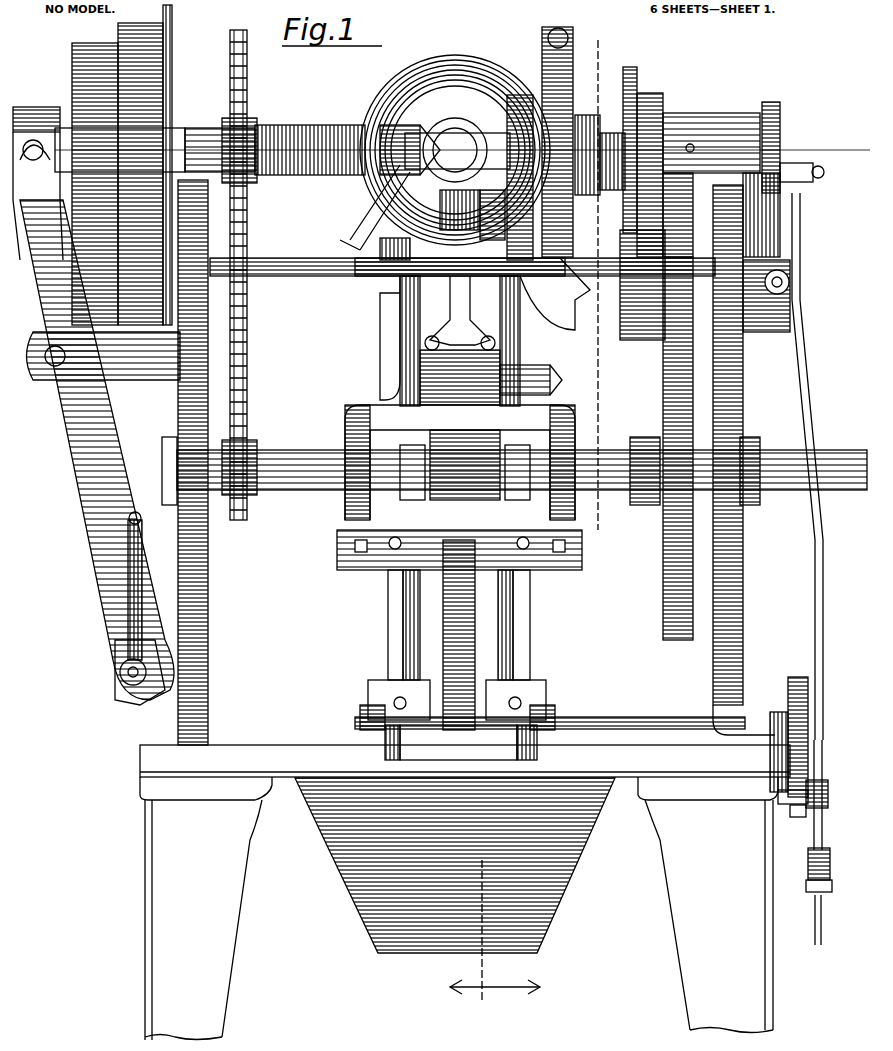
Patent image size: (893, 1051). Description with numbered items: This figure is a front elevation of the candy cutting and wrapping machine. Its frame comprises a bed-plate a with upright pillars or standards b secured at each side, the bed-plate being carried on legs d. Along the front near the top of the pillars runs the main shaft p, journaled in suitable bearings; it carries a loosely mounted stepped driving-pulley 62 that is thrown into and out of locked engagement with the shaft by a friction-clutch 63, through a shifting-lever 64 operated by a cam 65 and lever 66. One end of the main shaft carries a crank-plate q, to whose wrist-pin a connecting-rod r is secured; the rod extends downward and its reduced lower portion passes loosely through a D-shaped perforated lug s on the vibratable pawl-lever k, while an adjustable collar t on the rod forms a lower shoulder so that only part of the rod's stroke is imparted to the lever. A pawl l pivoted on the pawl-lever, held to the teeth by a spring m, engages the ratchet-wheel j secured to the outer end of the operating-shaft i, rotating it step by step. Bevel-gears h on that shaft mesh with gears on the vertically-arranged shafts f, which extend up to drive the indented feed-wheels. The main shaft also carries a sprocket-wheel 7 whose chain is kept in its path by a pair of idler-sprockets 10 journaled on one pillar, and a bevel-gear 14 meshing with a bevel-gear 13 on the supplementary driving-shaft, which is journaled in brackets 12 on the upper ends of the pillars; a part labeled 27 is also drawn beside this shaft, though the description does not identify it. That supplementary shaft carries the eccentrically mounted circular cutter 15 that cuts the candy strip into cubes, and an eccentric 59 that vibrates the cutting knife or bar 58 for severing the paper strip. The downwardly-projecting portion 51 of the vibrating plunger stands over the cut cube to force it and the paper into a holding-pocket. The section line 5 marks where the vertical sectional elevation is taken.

The section line 5 is at (532, 516).
The sprocket-wheel 7 is at (250, 105).
The idler-sprockets 10 is at (246, 418).
The supporting arms or brackets 12 is at (305, 125).
The bevel-gear 13 is at (478, 130).
The bevel-gear 14 is at (425, 115).
The circular cutter 15 is at (472, 55).
The collar 27 is at (540, 135).
The downwardly-projecting portion 51 is at (385, 218).
The vibrating cutting knife or bar 58 is at (382, 338).
The eccentric 59 is at (455, 133).
The stepped driving-pulley 62 is at (150, 52).
The friction-clutch 63 is at (55, 105).
The shifting-lever 64 is at (96, 560).
The cam 65 is at (120, 660).
The lever 66 is at (128, 536).
The bed-plate a is at (252, 748).
The upright pillars or standards b is at (208, 648).
The legs d is at (459, 908).
The vertically-arranged shafts f is at (412, 650).
The bevel-gears h is at (535, 725).
The operating-shaft i is at (648, 720).
The ratchet-wheel j is at (788, 680).
The pawl-lever k is at (775, 800).
The pawl l is at (782, 765).
The spring m is at (795, 817).
The main shaft p is at (298, 176).
The crank-plate q is at (771, 100).
The connecting-rod r is at (806, 385).
The D-shaped perforated lug or projection s is at (817, 793).
The collar t is at (808, 872).